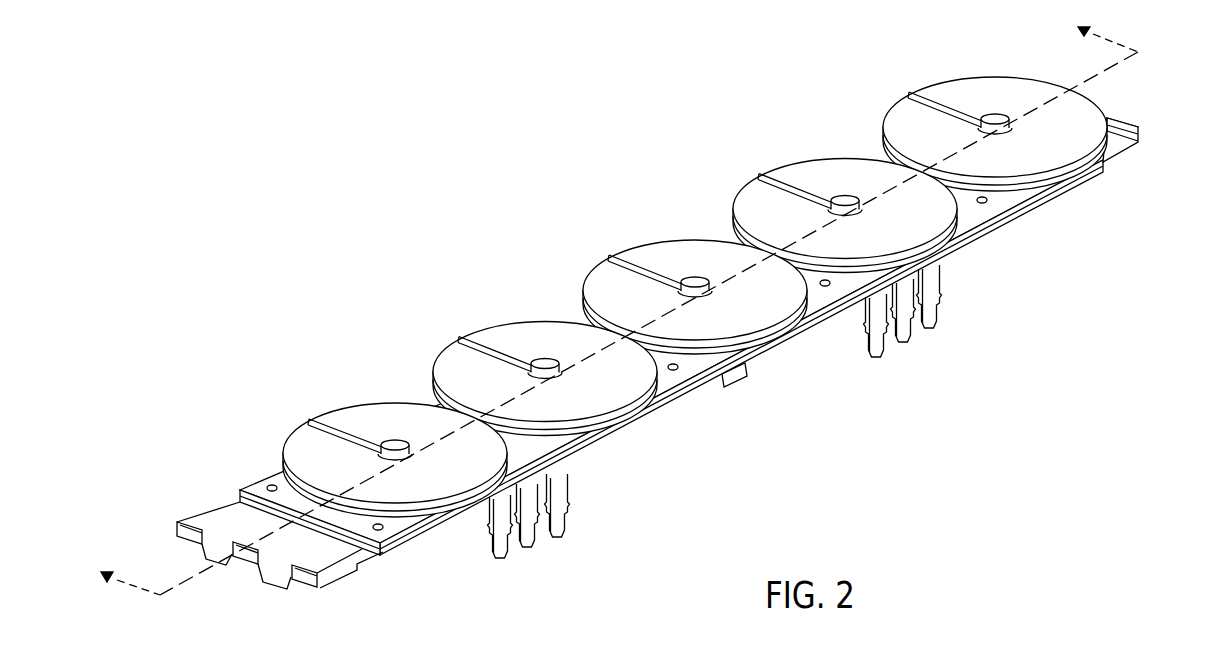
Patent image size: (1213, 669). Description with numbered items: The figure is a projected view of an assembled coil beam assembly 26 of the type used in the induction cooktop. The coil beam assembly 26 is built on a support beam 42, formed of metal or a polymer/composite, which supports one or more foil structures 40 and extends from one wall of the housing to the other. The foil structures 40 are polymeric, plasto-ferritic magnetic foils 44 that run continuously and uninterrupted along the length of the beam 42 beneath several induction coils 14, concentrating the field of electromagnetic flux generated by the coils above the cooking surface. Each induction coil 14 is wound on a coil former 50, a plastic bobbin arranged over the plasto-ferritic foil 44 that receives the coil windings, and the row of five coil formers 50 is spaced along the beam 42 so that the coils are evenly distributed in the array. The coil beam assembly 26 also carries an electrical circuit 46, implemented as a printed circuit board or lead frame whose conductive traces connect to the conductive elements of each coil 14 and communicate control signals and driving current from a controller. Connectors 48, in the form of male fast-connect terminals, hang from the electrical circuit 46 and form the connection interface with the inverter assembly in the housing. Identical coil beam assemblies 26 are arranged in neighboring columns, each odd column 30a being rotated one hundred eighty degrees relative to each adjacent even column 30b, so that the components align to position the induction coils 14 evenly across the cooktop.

The induction coil 14 is at (732, 203).
The coil beam assembly 26 is at (636, 322).
The odd column 30a is at (636, 322).
The even column 30b is at (636, 322).
The foil structure 40 is at (620, 336).
The beam 42 is at (215, 530).
The plasto-ferritic foil 44 is at (620, 336).
The electrical circuit 46 is at (685, 412).
The connector 48 is at (552, 536).
The coil former 50 is at (813, 183).